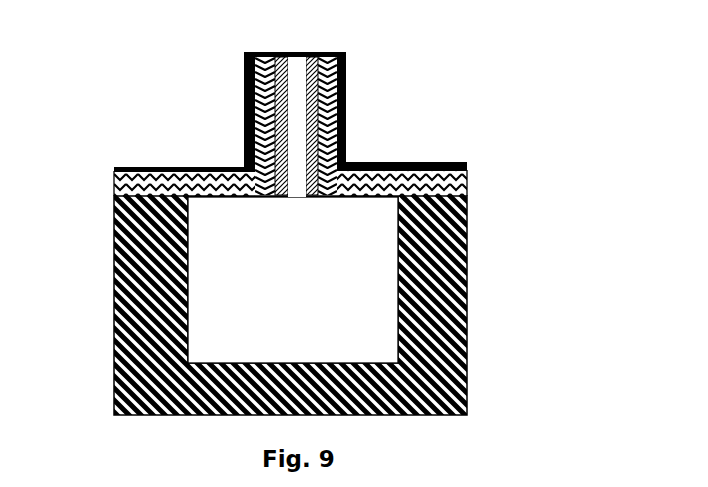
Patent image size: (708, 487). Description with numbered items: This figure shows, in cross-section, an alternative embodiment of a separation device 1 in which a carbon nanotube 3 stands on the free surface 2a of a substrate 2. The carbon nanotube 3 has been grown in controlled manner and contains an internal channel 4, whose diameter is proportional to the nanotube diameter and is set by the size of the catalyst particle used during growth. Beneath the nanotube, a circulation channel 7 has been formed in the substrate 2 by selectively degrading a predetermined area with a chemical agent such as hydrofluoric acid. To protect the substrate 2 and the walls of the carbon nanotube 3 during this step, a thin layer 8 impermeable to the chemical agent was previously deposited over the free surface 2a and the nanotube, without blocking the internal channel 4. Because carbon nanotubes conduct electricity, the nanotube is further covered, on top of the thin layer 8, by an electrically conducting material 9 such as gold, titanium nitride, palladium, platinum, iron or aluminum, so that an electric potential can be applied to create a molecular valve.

The separation device 1 is at (527, 208).
The substrate 2 is at (462, 320).
The free surface of substrate 2a is at (433, 164).
The carbon nanotube 3 is at (327, 152).
The internal channel 4 is at (295, 127).
The circulation channel 7 is at (217, 315).
The thin layer 8 is at (163, 188).
The electrically conducting material 9 is at (343, 79).